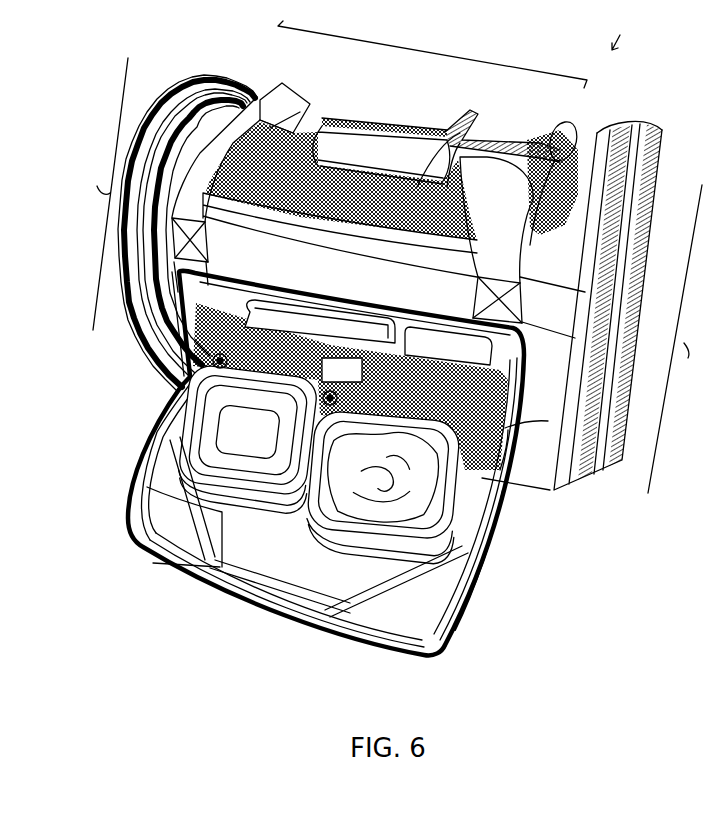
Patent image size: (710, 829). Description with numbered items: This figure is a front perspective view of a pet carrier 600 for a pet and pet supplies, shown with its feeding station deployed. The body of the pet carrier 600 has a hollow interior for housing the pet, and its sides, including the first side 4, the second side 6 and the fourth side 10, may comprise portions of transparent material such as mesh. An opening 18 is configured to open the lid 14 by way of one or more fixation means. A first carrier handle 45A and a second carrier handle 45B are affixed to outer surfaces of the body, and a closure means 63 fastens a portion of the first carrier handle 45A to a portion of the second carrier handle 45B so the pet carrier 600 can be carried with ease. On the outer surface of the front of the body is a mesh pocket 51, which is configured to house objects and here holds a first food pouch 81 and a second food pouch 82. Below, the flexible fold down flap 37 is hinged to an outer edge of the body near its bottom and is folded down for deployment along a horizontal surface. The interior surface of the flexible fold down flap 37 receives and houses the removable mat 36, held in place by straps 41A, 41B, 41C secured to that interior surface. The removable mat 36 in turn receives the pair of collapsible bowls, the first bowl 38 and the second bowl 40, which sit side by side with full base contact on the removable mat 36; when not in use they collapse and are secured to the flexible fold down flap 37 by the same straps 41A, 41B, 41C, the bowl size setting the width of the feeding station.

The fourth side 10 is at (409, 51).
The pet carrier 600 is at (622, 29).
The first side 4 is at (108, 194).
The second side 6 is at (675, 339).
The first carrier handle 45A is at (208, 157).
The second carrier handle 45B is at (285, 105).
The closure means 63 is at (366, 150).
The lid 14 is at (467, 133).
The opening 18 is at (577, 142).
The first food pouch 81 is at (175, 341).
The second food pouch 82 is at (510, 430).
The mesh pocket 51 is at (342, 370).
The first bowl 38 is at (238, 455).
The strap 41A is at (470, 522).
The strap 41B is at (390, 603).
The strap 41C is at (165, 479).
The second bowl 40 is at (480, 578).
The removable mat 36 is at (267, 572).
The flexible fold down flap 37 is at (443, 630).